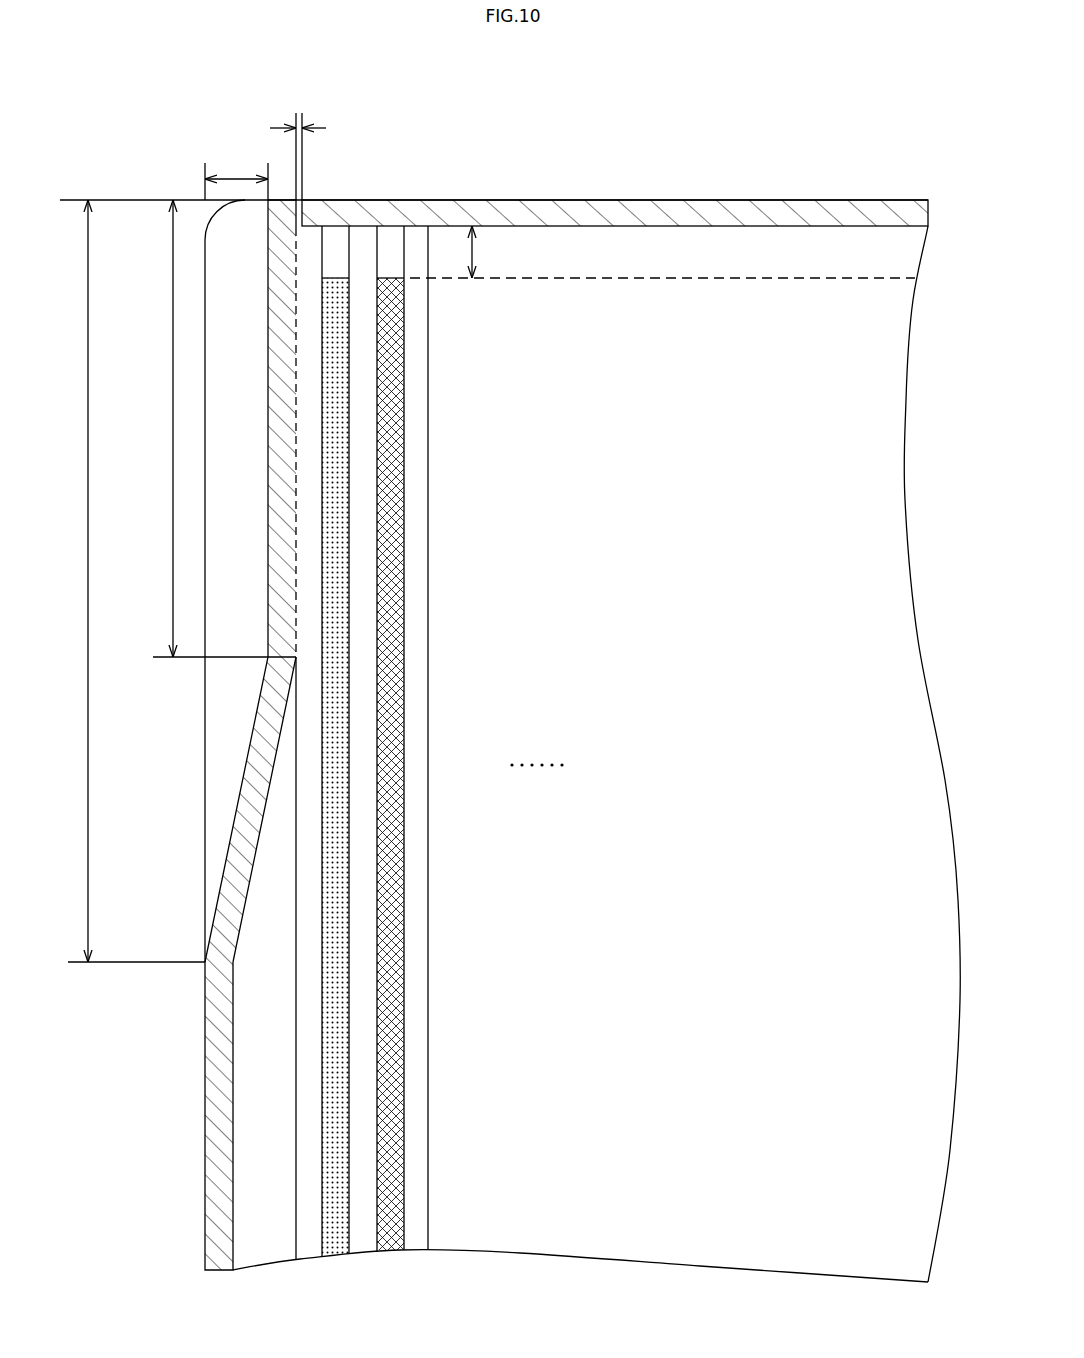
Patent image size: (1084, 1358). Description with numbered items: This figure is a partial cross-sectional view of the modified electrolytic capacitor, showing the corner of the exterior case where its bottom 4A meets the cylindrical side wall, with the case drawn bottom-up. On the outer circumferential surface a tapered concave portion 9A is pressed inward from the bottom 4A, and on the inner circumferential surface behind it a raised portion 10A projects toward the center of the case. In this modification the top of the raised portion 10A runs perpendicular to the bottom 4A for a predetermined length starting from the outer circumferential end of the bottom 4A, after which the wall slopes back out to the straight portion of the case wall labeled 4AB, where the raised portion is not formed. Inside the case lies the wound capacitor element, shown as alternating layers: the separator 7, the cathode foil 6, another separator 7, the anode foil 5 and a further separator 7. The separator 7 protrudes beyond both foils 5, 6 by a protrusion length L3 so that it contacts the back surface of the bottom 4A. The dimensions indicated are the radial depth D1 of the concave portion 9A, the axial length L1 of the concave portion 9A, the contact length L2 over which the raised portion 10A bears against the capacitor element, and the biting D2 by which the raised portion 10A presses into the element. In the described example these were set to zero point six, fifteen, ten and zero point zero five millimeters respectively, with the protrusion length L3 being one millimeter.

The bottom 4A is at (588, 200).
The lower side wall portion 4AB is at (205, 1100).
The concave portion 9A is at (205, 300).
The raised portion 10A is at (267, 798).
The separator 7 is at (310, 1257).
The cathode foil 6 is at (336, 1255).
The anode foil 5 is at (390, 1251).
The length in the axial direction L1 is at (125, 581).
The contact length L2 is at (209, 428).
The protrusion length L3 is at (662, 252).
The depth of the concave portion D1 is at (236, 170).
The biting D2 is at (298, 104).